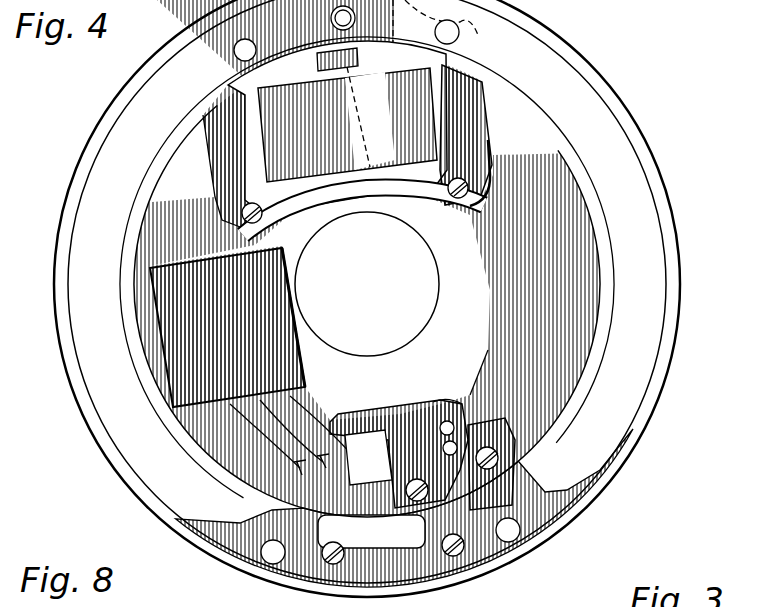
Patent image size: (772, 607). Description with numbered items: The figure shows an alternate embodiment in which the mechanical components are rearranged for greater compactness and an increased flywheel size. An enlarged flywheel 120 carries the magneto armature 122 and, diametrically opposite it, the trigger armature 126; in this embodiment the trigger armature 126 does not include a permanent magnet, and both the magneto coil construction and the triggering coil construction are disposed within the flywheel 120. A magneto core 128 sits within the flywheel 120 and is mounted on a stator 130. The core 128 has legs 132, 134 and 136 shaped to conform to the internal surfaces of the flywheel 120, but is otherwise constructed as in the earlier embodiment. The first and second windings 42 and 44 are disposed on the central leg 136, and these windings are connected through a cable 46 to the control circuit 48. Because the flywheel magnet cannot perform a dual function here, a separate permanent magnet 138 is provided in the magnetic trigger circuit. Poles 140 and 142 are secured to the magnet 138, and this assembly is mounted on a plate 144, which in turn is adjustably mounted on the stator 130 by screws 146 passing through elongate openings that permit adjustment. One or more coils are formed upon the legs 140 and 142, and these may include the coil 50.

The flywheel 120 is at (588, 78).
The magneto armature 122 is at (235, 70).
The trigger armature 126 is at (440, 578).
The magneto core 128 is at (489, 192).
The stator 130 is at (528, 292).
The leg 132 is at (477, 116).
The leg 134 is at (238, 144).
The central leg 136 is at (342, 80).
The permanent magnet 138 is at (436, 404).
The pole 140 is at (478, 430).
The pole 142 is at (342, 524).
The plate 144 is at (476, 395).
The screws 146 is at (498, 452).
The first winding 42 is at (337, 127).
The second winding 44 is at (298, 161).
The cable 46 is at (255, 245).
The control circuit 48 is at (235, 341).
The coil 50 is at (382, 428).